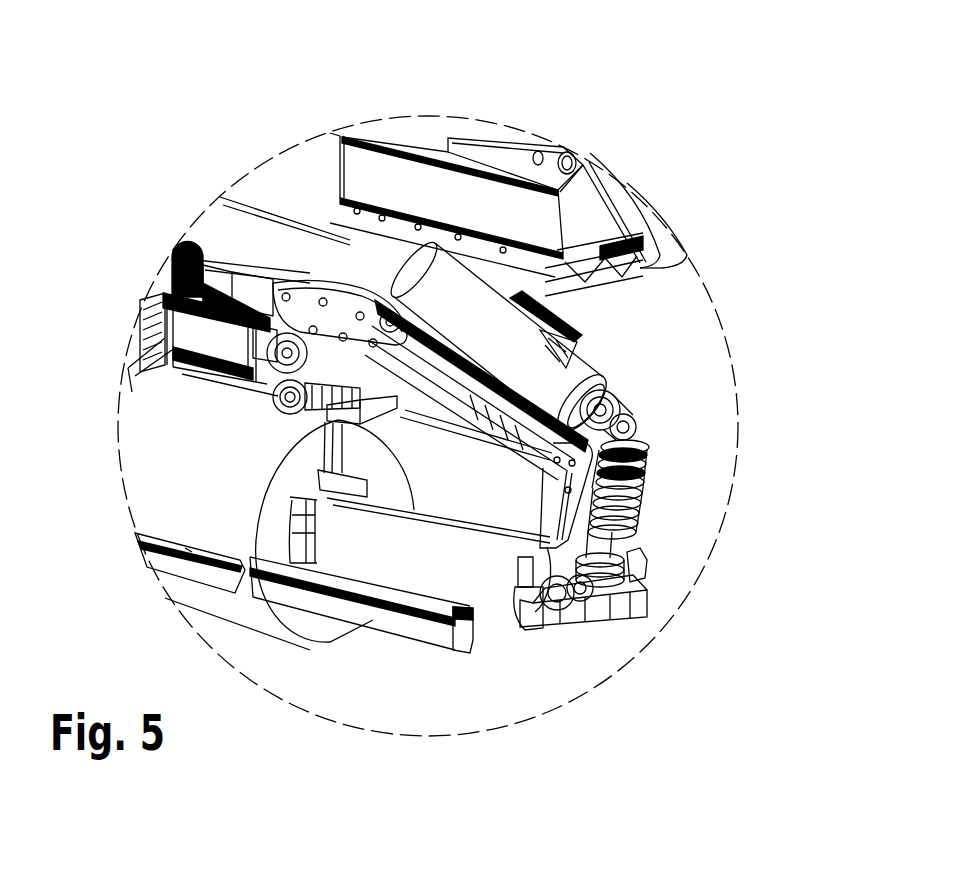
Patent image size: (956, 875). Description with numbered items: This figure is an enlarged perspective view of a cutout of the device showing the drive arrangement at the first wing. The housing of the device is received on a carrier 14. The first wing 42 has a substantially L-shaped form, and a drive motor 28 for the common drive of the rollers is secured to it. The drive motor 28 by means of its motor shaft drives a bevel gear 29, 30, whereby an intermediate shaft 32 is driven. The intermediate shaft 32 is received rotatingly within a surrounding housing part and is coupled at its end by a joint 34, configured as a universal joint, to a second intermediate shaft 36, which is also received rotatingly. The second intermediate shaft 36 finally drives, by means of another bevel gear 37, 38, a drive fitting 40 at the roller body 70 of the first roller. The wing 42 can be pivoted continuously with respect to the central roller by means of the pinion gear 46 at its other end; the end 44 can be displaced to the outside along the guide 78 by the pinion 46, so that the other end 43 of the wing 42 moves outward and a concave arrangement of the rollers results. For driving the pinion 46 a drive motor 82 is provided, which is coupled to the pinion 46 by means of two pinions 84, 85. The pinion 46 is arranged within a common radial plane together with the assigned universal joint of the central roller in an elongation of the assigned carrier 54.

The carrier 14 is at (428, 145).
The drive motor 28 is at (597, 357).
The bevel gear 29 is at (600, 408).
The bevel gear 30 is at (640, 463).
The intermediate shaft 32 is at (636, 503).
The joint 34 is at (612, 540).
The second intermediate shaft 36 is at (620, 580).
The bevel gear 37 is at (620, 633).
The bevel gear 38 is at (553, 633).
The drive fitting 40 is at (550, 627).
The wing 42 is at (460, 378).
The end of wing 43 is at (523, 627).
The end of wing 44 is at (343, 305).
The pinion gear 46 is at (383, 430).
The carrier 54 is at (300, 505).
The roller body 70 is at (490, 590).
The guide 78 is at (392, 623).
The drive motor 82 is at (235, 300).
The pinion 84 is at (292, 350).
The pinion 85 is at (287, 415).